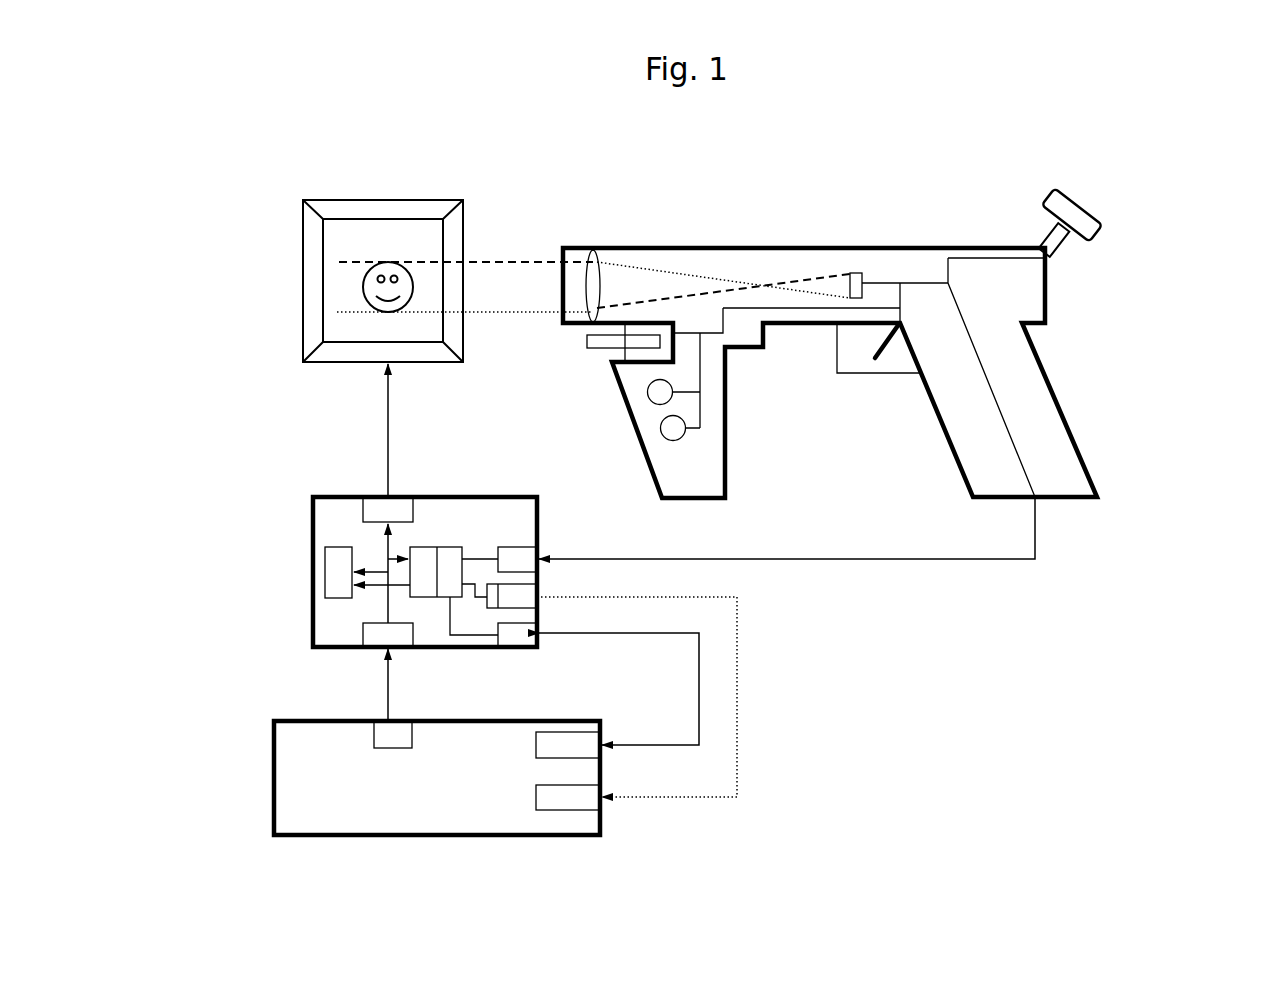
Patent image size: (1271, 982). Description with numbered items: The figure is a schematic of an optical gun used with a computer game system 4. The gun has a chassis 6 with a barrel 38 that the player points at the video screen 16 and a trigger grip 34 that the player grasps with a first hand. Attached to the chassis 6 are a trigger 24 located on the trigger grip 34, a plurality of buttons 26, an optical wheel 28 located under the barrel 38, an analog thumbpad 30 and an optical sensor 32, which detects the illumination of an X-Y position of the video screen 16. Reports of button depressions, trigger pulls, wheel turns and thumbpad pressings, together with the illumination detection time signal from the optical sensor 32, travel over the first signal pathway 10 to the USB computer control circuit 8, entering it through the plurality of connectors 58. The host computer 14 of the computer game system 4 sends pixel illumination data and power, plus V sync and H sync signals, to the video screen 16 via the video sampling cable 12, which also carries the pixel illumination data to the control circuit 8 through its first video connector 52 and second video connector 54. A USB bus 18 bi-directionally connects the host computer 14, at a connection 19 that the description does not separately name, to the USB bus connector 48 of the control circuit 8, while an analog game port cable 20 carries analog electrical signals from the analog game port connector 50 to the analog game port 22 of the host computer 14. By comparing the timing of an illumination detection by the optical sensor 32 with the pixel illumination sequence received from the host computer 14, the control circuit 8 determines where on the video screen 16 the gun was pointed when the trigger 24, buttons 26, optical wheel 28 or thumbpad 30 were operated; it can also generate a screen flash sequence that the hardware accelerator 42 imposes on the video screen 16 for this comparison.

The computer game system 4 is at (1268, 62).
The chassis 6 is at (758, 220).
The USB computer control circuit 8 is at (250, 545).
The first signal pathway 10 is at (997, 393).
The video sampling cable 12 is at (387, 445).
The host computer 14 is at (274, 835).
The video screen 16 is at (408, 198).
The USB bus 18 is at (699, 680).
The input port 19 is at (603, 735).
The analog game port cable 20 is at (737, 740).
The analog game port 22 is at (603, 835).
The trigger 24 is at (878, 364).
The plurality of buttons 26 is at (660, 428).
The optical wheel 28 is at (587, 344).
The analog thumbpad 30 is at (1063, 188).
The optical sensor 32 is at (856, 272).
The trigger grip 34 is at (1075, 440).
The barrel 38 is at (684, 247).
The hardware accelerator 42 is at (325, 573).
The USB bus connector 48 is at (525, 648).
The analog game port connector 50 is at (457, 572).
The first video connector 52 is at (403, 648).
The second video connector 54 is at (372, 497).
The plurality of connectors 58 is at (538, 546).